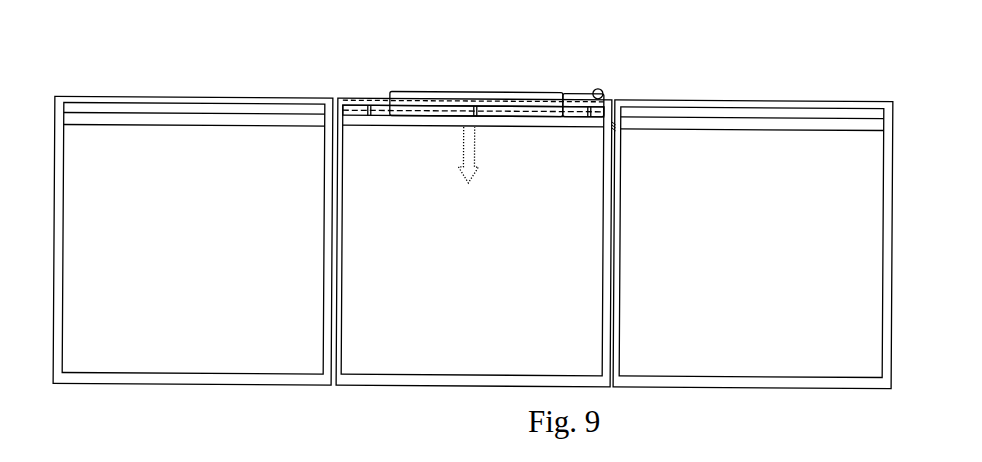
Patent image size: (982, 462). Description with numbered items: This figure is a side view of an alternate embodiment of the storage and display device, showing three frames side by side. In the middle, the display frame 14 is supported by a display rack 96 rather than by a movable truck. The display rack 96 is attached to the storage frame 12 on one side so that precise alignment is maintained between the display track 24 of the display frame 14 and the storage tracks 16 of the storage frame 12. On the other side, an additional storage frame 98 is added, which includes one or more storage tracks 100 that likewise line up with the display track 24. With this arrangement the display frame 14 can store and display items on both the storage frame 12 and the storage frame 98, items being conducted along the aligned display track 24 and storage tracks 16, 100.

The storage frame 12 is at (620, 232).
The display frame 14 is at (533, 90).
The storage track 16 is at (720, 121).
The display track 24 is at (530, 121).
The display rack 96 is at (342, 249).
The storage frame 98 is at (331, 235).
The storage track 100 is at (216, 124).